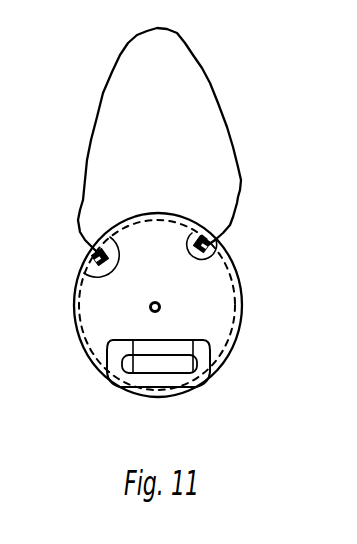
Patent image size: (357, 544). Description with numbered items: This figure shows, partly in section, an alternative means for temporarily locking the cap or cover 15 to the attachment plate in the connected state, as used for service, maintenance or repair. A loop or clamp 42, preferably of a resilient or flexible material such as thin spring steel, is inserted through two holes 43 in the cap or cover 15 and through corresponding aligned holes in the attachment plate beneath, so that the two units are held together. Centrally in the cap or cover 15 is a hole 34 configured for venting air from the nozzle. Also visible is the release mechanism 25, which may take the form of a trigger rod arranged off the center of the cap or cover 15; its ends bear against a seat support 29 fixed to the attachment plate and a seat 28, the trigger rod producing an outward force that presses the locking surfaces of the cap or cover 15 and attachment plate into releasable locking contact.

The loop or clamp 42 is at (222, 96).
The cap or cover 15 is at (94, 305).
The holes 43 is at (93, 256).
The hole 34 is at (161, 309).
The seat support 29 is at (110, 383).
The seat 28 is at (198, 386).
The release mechanism 25 is at (146, 363).